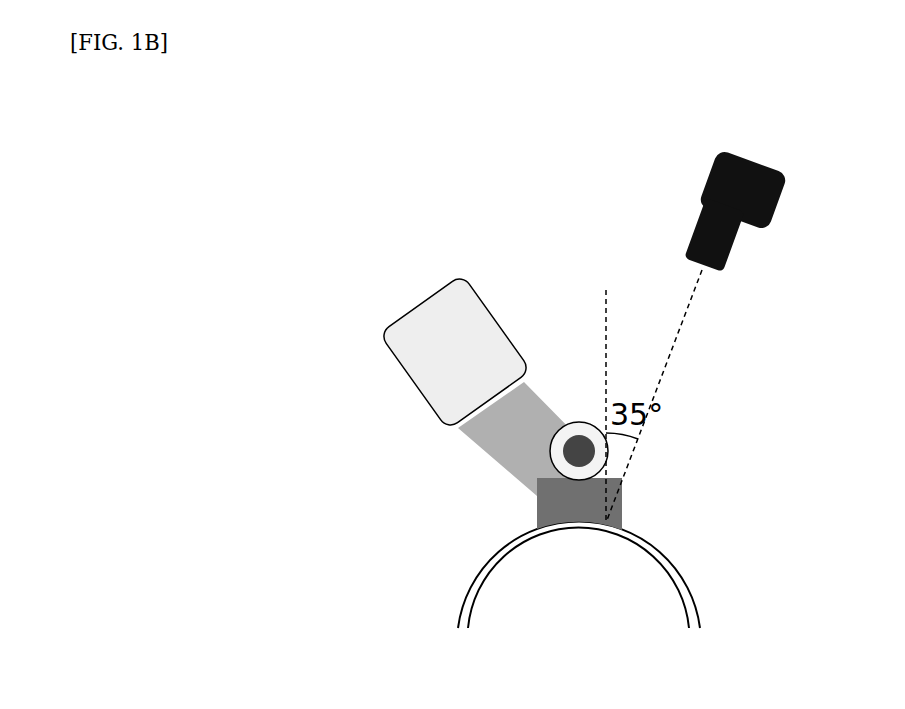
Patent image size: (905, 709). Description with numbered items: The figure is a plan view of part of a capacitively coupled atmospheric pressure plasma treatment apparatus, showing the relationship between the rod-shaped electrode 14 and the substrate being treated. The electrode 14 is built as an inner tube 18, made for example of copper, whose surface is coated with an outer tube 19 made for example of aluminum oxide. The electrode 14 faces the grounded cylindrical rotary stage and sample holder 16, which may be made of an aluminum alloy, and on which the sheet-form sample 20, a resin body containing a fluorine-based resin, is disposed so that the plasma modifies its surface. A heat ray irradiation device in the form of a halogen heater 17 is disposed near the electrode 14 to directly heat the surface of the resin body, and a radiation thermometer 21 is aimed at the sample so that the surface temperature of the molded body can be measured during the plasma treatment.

The electrode 14 is at (345, 367).
The grounded cylindrical rotary stage and sample holder 16 is at (530, 587).
The halogen heater 17 is at (427, 315).
The inner tube 18 is at (567, 440).
The outer tube 19 is at (583, 422).
The sample 20 is at (633, 530).
The radiation thermometer 21 is at (697, 334).